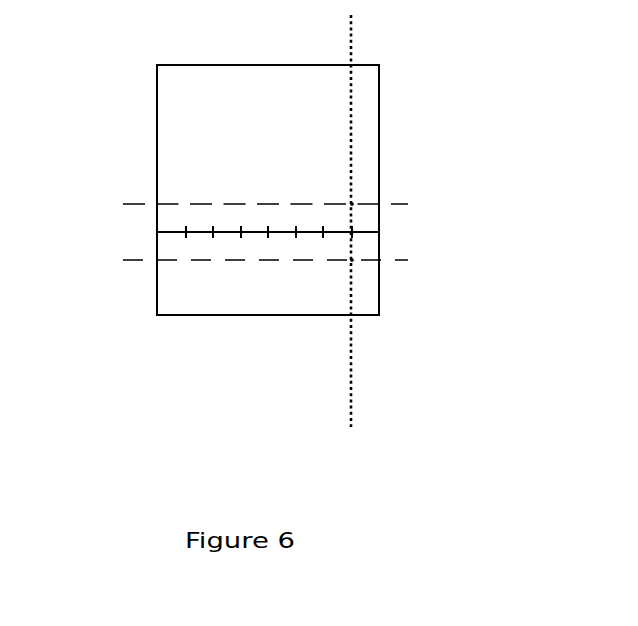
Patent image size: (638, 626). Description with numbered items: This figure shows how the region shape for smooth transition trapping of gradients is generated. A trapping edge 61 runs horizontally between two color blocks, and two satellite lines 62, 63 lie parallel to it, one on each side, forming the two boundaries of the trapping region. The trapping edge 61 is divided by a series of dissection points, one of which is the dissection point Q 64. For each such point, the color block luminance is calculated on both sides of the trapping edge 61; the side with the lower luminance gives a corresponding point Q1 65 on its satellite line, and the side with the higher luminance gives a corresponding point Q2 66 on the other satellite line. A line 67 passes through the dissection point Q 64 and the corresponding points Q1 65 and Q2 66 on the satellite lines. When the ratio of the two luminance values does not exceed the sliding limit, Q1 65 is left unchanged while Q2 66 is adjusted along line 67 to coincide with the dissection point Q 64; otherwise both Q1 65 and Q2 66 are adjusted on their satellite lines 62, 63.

The trapping edge 61 is at (158, 230).
The satellite line 62 is at (143, 203).
The satellite line 63 is at (143, 262).
The dissection point Q 64 is at (352, 232).
The corresponding point Q1 65 is at (352, 204).
The corresponding point Q2 66 is at (352, 260).
The line through dissection points 67 is at (352, 51).